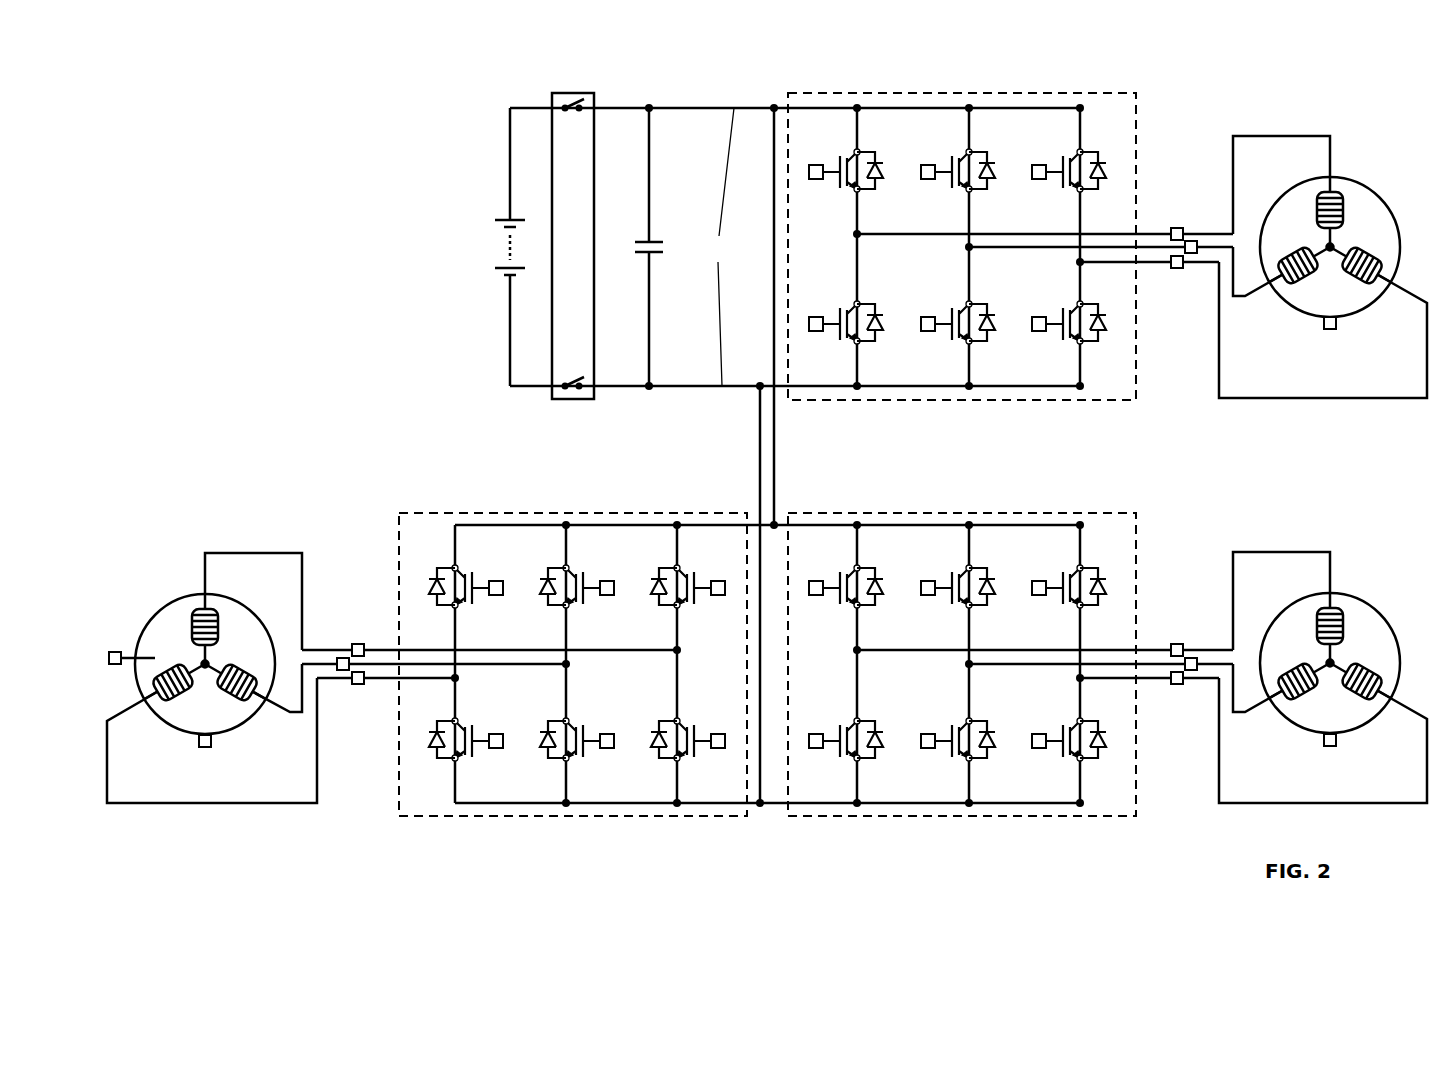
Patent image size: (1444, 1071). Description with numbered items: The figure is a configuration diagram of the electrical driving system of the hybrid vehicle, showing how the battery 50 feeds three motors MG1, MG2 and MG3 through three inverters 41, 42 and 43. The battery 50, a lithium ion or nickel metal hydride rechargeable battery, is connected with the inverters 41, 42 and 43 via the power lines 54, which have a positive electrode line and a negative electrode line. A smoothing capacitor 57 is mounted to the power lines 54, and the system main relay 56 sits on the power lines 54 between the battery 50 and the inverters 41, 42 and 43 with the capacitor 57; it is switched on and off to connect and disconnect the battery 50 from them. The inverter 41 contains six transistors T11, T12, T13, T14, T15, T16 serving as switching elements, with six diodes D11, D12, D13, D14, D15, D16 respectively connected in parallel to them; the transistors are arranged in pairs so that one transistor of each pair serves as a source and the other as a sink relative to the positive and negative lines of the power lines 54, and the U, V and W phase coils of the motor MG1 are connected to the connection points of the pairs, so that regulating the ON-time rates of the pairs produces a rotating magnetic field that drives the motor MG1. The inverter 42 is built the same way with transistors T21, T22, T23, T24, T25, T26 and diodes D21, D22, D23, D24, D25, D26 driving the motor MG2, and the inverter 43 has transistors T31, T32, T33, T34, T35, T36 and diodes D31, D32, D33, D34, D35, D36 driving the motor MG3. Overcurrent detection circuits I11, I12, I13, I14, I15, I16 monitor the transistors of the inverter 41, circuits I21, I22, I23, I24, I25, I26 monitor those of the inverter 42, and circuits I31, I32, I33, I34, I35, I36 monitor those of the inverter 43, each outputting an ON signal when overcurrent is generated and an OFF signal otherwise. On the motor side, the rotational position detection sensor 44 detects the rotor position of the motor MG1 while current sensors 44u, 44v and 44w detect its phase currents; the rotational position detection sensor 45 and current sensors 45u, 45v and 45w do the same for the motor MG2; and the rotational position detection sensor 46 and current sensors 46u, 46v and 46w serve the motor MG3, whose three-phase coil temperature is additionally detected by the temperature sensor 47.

The inverter 41 is at (957, 92).
The inverter 42 is at (957, 512).
The inverter 43 is at (581, 512).
The rotational position detection sensor 44 is at (1330, 330).
The current sensor 44u is at (1176, 227).
The current sensor 44v is at (1192, 240).
The current sensor 44w is at (1176, 269).
The rotational position detection sensor 45 is at (1330, 747).
The current sensor 45u is at (1176, 643).
The current sensor 45v is at (1192, 657).
The current sensor 45w is at (1176, 685).
The rotational position detection sensor 46 is at (205, 748).
The current sensor 46u is at (359, 644).
The current sensor 46v is at (343, 657).
The current sensor 46w is at (358, 685).
The temperature sensor 47 is at (115, 652).
The battery 50 is at (510, 218).
The power lines 54 is at (718, 247).
The system main relay 56 is at (572, 93).
The capacitor 57 is at (655, 240).
The motor MG1 is at (1362, 184).
The motor MG2 is at (1362, 600).
The motor MG3 is at (172, 598).
The transistor T11 is at (838, 160).
The transistor T12 is at (950, 160).
The transistor T13 is at (1061, 160).
The transistor T14 is at (838, 312).
The transistor T15 is at (950, 312).
The transistor T16 is at (1061, 312).
The transistor T21 is at (838, 576).
The transistor T22 is at (950, 576).
The transistor T23 is at (1061, 576).
The transistor T24 is at (838, 729).
The transistor T25 is at (950, 729).
The transistor T26 is at (1061, 729).
The transistor T31 is at (711, 561).
The transistor T32 is at (600, 561).
The transistor T33 is at (489, 561).
The transistor T34 is at (711, 714).
The transistor T35 is at (600, 714).
The transistor T36 is at (489, 714).
The diode D11 is at (880, 182).
The diode D12 is at (992, 182).
The diode D13 is at (1103, 182).
The diode D14 is at (880, 334).
The diode D15 is at (992, 334).
The diode D16 is at (1103, 334).
The diode D21 is at (880, 598).
The diode D22 is at (992, 598).
The diode D23 is at (1103, 598).
The diode D24 is at (880, 751).
The diode D25 is at (992, 751).
The diode D26 is at (1103, 751).
The diode D31 is at (654, 598).
The diode D32 is at (543, 598).
The diode D33 is at (432, 598).
The diode D34 is at (654, 751).
The diode D35 is at (543, 751).
The diode D36 is at (432, 751).
The overcurrent detection circuit I11 is at (818, 180).
The overcurrent detection circuit I12 is at (930, 180).
The overcurrent detection circuit I13 is at (1041, 180).
The overcurrent detection circuit I14 is at (818, 332).
The overcurrent detection circuit I15 is at (930, 332).
The overcurrent detection circuit I16 is at (1041, 332).
The overcurrent detection circuit I21 is at (818, 596).
The overcurrent detection circuit I22 is at (930, 596).
The overcurrent detection circuit I23 is at (1041, 596).
The overcurrent detection circuit I24 is at (818, 749).
The overcurrent detection circuit I25 is at (930, 749).
The overcurrent detection circuit I26 is at (1041, 749).
The overcurrent detection circuit I31 is at (716, 596).
The overcurrent detection circuit I32 is at (605, 596).
The overcurrent detection circuit I33 is at (494, 596).
The overcurrent detection circuit I34 is at (716, 749).
The overcurrent detection circuit I35 is at (605, 749).
The overcurrent detection circuit I36 is at (494, 749).